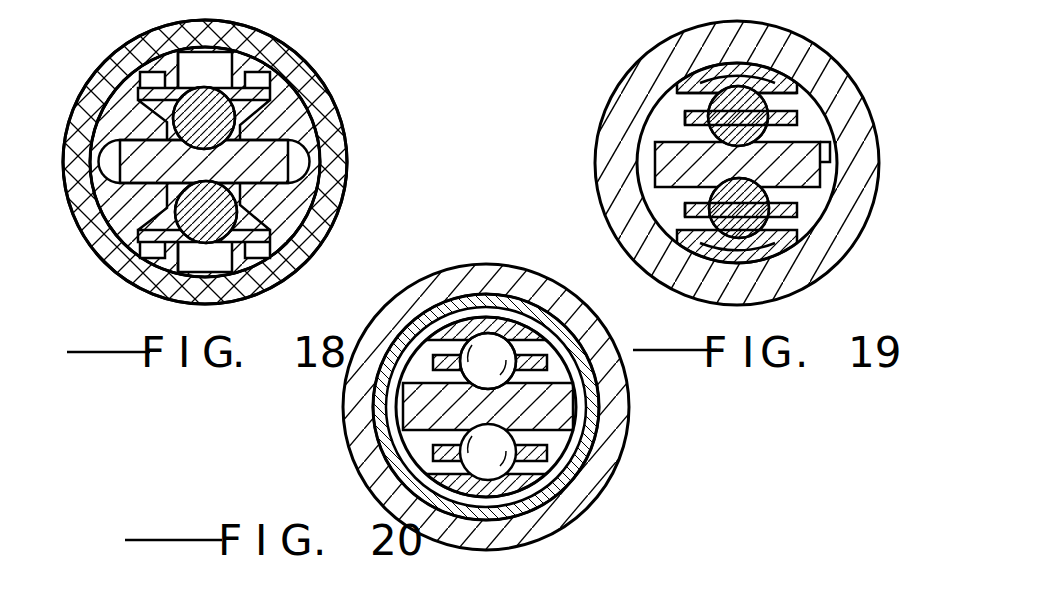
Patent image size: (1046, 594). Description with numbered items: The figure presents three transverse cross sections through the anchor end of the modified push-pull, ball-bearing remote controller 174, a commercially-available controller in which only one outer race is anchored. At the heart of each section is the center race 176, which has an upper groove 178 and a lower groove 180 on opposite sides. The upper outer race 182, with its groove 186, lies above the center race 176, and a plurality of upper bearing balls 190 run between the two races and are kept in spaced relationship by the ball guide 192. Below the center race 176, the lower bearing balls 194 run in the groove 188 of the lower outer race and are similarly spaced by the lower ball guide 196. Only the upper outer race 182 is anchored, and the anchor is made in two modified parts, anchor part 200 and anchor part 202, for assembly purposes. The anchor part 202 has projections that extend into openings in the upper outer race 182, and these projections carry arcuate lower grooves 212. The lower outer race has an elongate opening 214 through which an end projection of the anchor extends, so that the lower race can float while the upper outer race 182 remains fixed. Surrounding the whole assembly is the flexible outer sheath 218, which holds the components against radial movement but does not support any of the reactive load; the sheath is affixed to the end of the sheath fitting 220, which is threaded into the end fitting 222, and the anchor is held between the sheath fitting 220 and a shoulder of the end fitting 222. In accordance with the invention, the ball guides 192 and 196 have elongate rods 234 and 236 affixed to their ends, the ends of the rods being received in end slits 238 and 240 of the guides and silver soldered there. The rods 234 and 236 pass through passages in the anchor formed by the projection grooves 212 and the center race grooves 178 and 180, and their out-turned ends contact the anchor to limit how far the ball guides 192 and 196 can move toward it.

In FIG. 18, the push-pull, ball-bearing, remote controller 174 is at (325, 128).
In FIG. 19, the center race 176 is at (830, 162).
In FIG. 20, the center race 176 is at (575, 412).
In FIG. 19, the upper groove 178 is at (757, 136).
In FIG. 20, the upper groove 178 is at (495, 380).
In FIG. 19, the lower groove 180 is at (717, 193).
In FIG. 20, the lower groove 180 is at (465, 462).
In FIG. 19, the upper outer race 182 is at (677, 95).
In FIG. 19, the groove 186 is at (787, 73).
In FIG. 19, the groove 188 is at (803, 232).
In FIG. 20, the upper bearing balls 190 is at (482, 335).
In FIG. 19, the ball guide 192 is at (797, 118).
In FIG. 20, the ball guide 192 is at (432, 362).
In FIG. 20, the lower bearing balls 194 is at (520, 462).
In FIG. 19, the lower ball guide 196 is at (797, 213).
In FIG. 20, the lower ball guide 196 is at (436, 453).
In FIG. 18, the anchor part 200 is at (321, 182).
In FIG. 18, the anchor part 202 is at (98, 106).
In FIG. 18, the arcuate lower grooves 212 is at (207, 90).
In FIG. 18, the elongate opening 214 is at (226, 240).
In FIG. 20, the flexible outer sheath 218 is at (440, 305).
In FIG. 19, the sheath fitting 220 is at (800, 33).
In FIG. 20, the sheath fitting 220 is at (573, 517).
In FIG. 18, the end fitting 222 is at (325, 94).
In FIG. 18, the rod 234 is at (172, 95).
In FIG. 19, the rod 234 is at (752, 98).
In FIG. 18, the rod 236 is at (172, 222).
In FIG. 19, the rod 236 is at (722, 237).
In FIG. 19, the end slit 238 is at (700, 117).
In FIG. 19, the end slit 240 is at (700, 210).